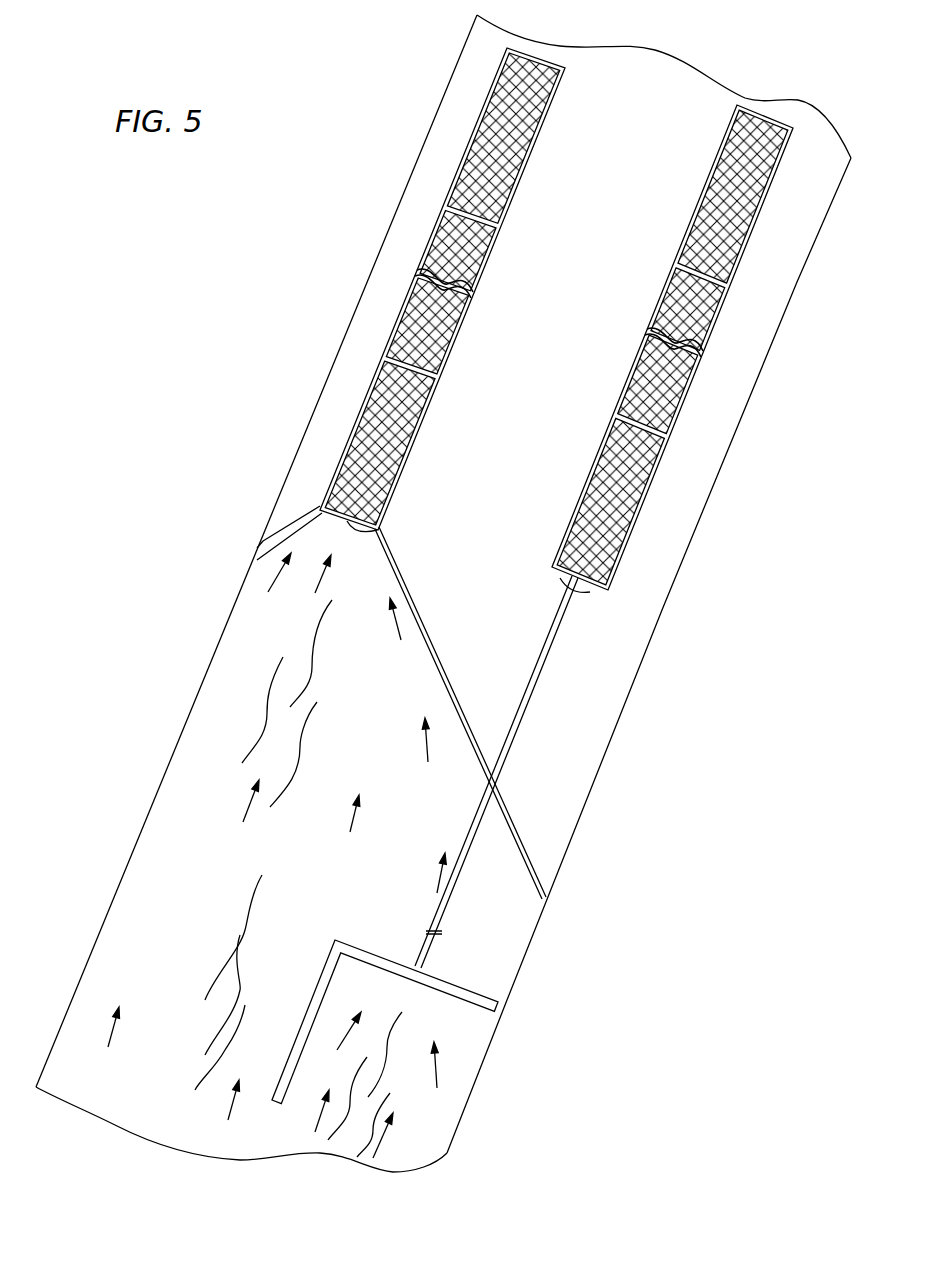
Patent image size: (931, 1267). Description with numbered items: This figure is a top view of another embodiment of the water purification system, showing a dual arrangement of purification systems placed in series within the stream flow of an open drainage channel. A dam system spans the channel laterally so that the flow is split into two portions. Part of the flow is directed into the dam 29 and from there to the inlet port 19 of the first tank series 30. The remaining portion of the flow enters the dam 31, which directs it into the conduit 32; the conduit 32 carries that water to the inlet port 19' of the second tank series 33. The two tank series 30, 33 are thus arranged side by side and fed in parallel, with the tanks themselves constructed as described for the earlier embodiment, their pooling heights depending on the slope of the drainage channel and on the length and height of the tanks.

The dam 29 is at (273, 622).
The first tank series 30 is at (385, 330).
The tank series 33 is at (628, 360).
The inlet port 19 is at (446, 699).
The inlet port 19' is at (671, 576).
The conduit 32 is at (520, 725).
The dam 31 is at (417, 1032).